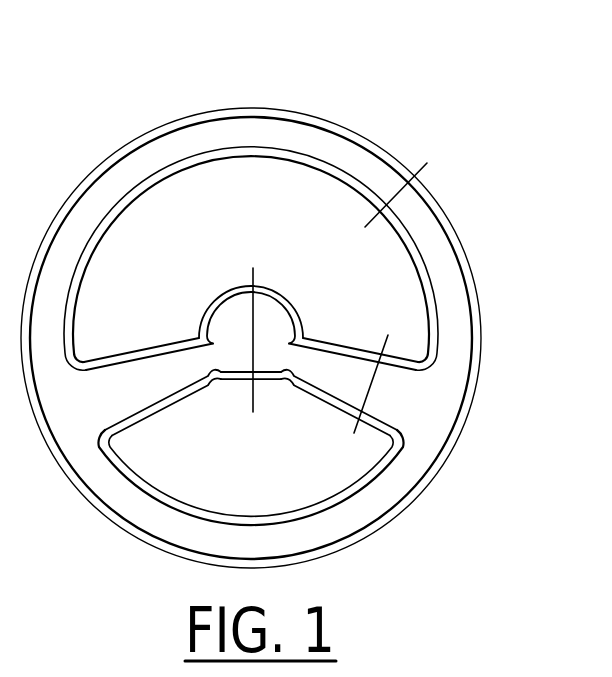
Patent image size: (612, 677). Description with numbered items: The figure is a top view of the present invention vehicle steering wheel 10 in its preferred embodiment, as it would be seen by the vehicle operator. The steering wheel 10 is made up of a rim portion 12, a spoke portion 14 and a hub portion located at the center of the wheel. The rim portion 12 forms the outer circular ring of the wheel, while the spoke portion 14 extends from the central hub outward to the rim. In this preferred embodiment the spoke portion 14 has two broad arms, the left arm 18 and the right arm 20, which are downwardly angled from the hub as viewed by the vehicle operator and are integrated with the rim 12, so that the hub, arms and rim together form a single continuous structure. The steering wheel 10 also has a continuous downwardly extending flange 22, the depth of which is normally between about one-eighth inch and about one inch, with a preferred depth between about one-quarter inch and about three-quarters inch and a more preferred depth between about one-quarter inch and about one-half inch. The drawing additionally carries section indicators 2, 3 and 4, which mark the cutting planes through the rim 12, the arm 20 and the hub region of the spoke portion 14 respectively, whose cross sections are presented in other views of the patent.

The vehicle steering wheel 10 is at (273, 300).
The rim portion 12 is at (300, 112).
The spoke portion 14 is at (130, 383).
The left arm 18 is at (177, 373).
The right arm 20 is at (318, 363).
The continuous downwardly extending flange 22 is at (415, 257).
The section line 2- 2 is at (431, 166).
The section line 3- 3 is at (392, 351).
The section line 4- 4 is at (260, 277).